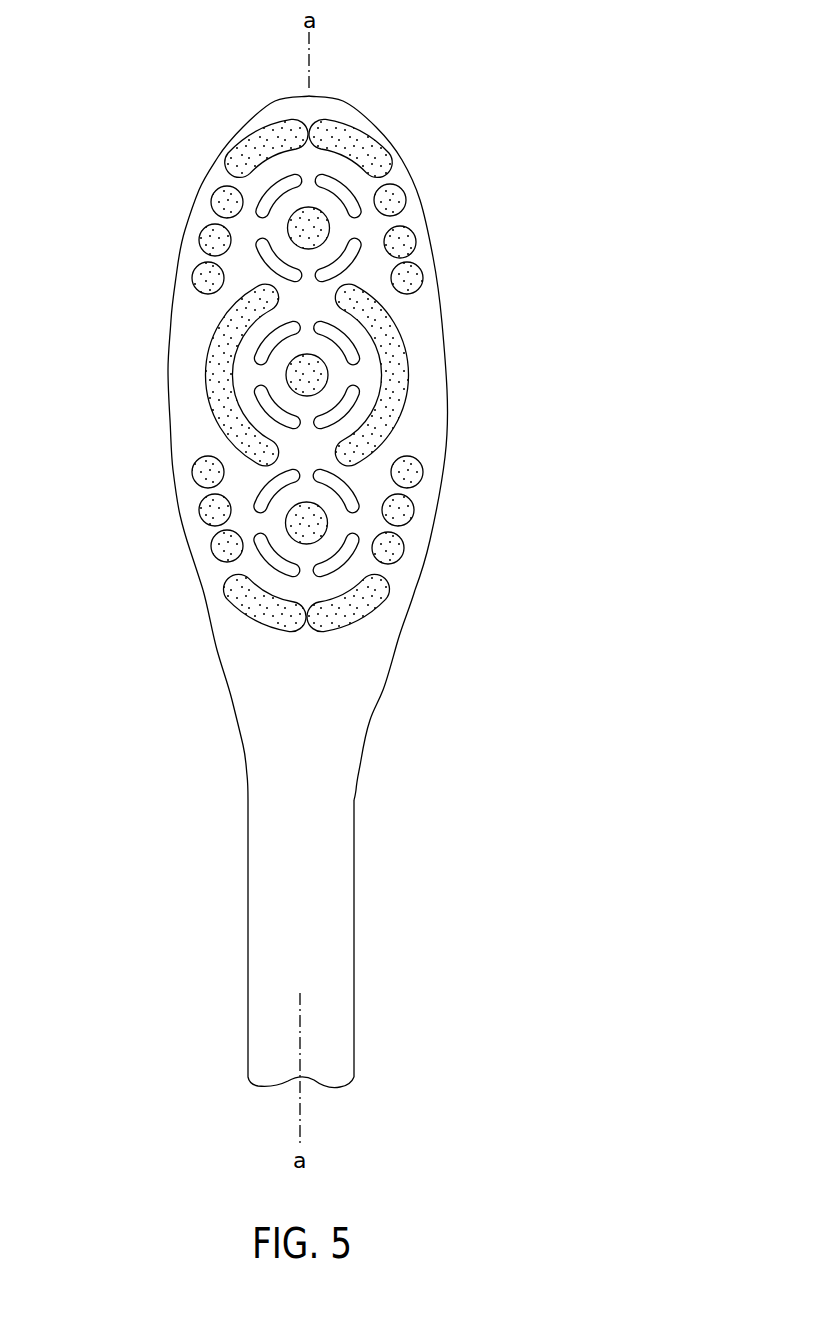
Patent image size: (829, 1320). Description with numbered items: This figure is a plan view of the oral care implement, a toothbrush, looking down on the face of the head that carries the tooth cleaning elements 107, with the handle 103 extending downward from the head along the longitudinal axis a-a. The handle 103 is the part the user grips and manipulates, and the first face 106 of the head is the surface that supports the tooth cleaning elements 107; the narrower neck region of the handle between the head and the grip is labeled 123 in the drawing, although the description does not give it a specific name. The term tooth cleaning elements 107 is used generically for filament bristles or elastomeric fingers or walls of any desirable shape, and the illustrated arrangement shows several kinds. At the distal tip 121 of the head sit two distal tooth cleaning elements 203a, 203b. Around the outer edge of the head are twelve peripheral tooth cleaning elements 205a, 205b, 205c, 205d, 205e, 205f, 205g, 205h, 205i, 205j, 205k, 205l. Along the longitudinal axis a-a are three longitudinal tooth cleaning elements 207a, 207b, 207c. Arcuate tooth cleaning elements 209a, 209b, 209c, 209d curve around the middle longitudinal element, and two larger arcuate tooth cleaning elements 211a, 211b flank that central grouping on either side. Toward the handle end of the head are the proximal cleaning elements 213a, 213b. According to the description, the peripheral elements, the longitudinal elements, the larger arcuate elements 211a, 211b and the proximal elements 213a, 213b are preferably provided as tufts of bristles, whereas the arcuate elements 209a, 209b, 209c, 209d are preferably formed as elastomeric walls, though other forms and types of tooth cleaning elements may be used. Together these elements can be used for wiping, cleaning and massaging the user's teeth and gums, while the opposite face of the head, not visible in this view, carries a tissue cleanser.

The tooth cleaning elements 107 is at (432, 687).
The distal tip 121 is at (327, 97).
The neck 123 is at (330, 717).
The handle 103 is at (354, 950).
The first face 106 is at (343, 823).
The distal tooth cleaning element 203a is at (357, 128).
The distal tooth cleaning element 203b is at (270, 123).
The peripheral tooth cleaning element 205a is at (405, 197).
The peripheral tooth cleaning element 205b is at (415, 242).
The peripheral tooth cleaning element 205c is at (423, 280).
The peripheral tooth cleaning element 205d is at (423, 467).
The peripheral tooth cleaning element 205e is at (413, 510).
The peripheral tooth cleaning element 205f is at (403, 548).
The peripheral tooth cleaning element 205g is at (210, 203).
The peripheral tooth cleaning element 205h is at (199, 241).
The peripheral tooth cleaning element 205i is at (192, 280).
The peripheral tooth cleaning element 205j is at (192, 472).
The peripheral tooth cleaning element 205k is at (199, 512).
The peripheral tooth cleaning element 205l is at (212, 551).
The longitudinal tooth cleaning element 207a is at (310, 228).
The longitudinal tooth cleaning element 207b is at (308, 375).
The longitudinal tooth cleaning element 207c is at (308, 523).
The arcuate tooth cleaning element 209a is at (258, 332).
The arcuate tooth cleaning element 209b is at (258, 412).
The arcuate tooth cleaning element 209c is at (358, 332).
The arcuate tooth cleaning element 209d is at (358, 414).
The arcuate tooth cleaning element 211a is at (407, 363).
The arcuate tooth cleaning element 211b is at (205, 375).
The proximal cleaning element 213a is at (372, 622).
The proximal cleaning element 213b is at (245, 612).